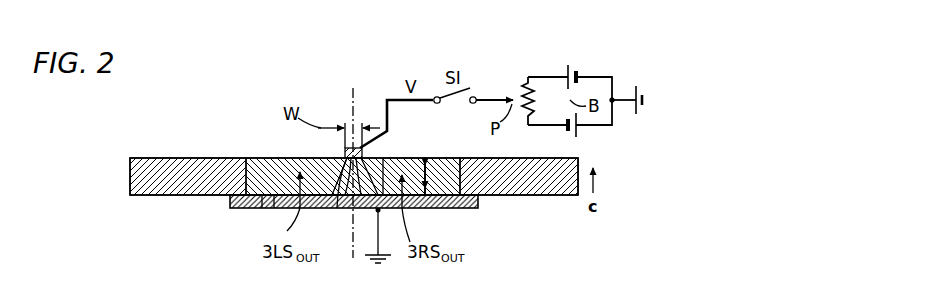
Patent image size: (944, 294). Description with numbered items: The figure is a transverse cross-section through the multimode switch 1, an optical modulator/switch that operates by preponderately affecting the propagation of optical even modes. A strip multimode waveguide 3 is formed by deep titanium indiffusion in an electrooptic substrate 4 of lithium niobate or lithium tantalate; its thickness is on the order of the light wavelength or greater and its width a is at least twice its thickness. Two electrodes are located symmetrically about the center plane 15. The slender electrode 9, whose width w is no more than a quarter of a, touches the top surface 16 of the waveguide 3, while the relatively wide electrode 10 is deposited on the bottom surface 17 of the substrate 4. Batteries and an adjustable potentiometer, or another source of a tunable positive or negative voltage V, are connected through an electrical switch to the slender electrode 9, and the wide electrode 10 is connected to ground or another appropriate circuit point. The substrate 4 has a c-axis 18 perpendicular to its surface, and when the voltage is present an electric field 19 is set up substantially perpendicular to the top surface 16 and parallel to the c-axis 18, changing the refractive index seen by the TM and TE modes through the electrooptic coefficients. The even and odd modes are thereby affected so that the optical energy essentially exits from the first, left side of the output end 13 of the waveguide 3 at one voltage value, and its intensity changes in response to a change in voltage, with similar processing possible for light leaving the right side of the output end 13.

The multimode switch 1 is at (244, 82).
The multimode waveguide 3 is at (450, 158).
The substrate 4 is at (186, 158).
The slender electrode 9 is at (343, 151).
The wide electrode 10 is at (242, 208).
The output end 13 is at (383, 158).
The center plane 15 is at (353, 95).
The top surface 16 is at (268, 158).
The bottom surface 17 is at (268, 208).
The c-axis 18 is at (594, 185).
The electric field 19 is at (337, 208).